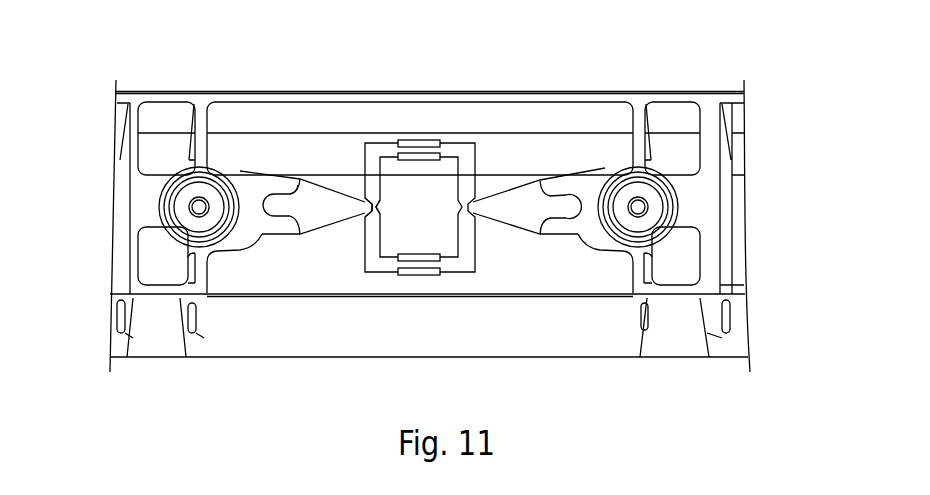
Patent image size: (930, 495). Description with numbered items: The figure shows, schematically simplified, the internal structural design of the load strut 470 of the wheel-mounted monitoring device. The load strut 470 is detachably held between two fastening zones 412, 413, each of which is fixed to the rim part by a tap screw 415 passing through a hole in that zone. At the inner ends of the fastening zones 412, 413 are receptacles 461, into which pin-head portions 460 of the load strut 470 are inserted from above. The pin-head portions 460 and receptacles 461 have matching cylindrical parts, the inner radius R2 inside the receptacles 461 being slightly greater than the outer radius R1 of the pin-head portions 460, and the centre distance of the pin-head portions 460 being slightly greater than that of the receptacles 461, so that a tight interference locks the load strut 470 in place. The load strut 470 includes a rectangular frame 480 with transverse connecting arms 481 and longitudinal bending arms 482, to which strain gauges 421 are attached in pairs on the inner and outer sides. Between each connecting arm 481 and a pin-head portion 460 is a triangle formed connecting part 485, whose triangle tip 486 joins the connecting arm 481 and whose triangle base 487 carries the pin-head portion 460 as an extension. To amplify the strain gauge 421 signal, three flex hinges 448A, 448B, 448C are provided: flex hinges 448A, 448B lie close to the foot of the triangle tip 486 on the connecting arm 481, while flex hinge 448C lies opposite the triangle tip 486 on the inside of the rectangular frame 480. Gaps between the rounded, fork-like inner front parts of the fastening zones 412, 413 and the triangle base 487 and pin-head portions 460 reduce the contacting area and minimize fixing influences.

The fastening zone 412 is at (243, 252).
The fastening zone 413 is at (603, 244).
The tap screw 415 is at (178, 207).
The strain gauge 421 is at (422, 154).
The flex hinge 448A is at (358, 190).
The flex hinge 448B is at (347, 229).
The flex hinge 448C is at (388, 200).
The pin-head portion 460 is at (547, 192).
The receptacle 461 is at (271, 235).
The load strut 470 is at (352, 114).
The rectangular frame 480 is at (378, 126).
The connecting arm 481 is at (355, 226).
The bending arm 482 is at (460, 150).
The triangle formed connecting part 485 is at (510, 203).
The triangle tip 486 is at (486, 210).
The triangle base 487 is at (542, 184).
The outer radius of pin-head portion R1 is at (258, 192).
The inner radius of receptacle R2 is at (268, 206).